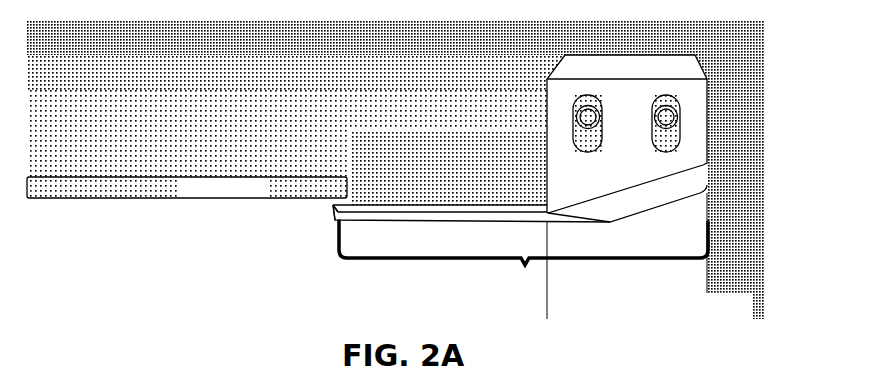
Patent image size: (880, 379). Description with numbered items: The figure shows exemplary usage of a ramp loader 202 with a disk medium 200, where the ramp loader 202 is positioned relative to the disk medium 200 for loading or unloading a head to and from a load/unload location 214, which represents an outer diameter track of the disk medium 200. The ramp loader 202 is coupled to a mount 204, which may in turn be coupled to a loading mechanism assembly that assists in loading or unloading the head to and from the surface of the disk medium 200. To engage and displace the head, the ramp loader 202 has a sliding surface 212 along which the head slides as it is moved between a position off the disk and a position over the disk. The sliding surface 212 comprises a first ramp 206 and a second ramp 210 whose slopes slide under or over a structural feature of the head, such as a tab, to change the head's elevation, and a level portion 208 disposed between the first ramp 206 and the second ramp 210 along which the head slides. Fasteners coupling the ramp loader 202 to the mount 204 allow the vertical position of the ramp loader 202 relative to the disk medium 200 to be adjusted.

The disk medium 200 is at (84, 178).
The ramp loader 202 is at (563, 106).
The mount 204 is at (659, 66).
The first ramp 206 is at (634, 183).
The level portion 208 is at (502, 204).
The second ramp 210 is at (349, 207).
The sliding surface 212 is at (523, 264).
The load/unload location 214 is at (326, 203).